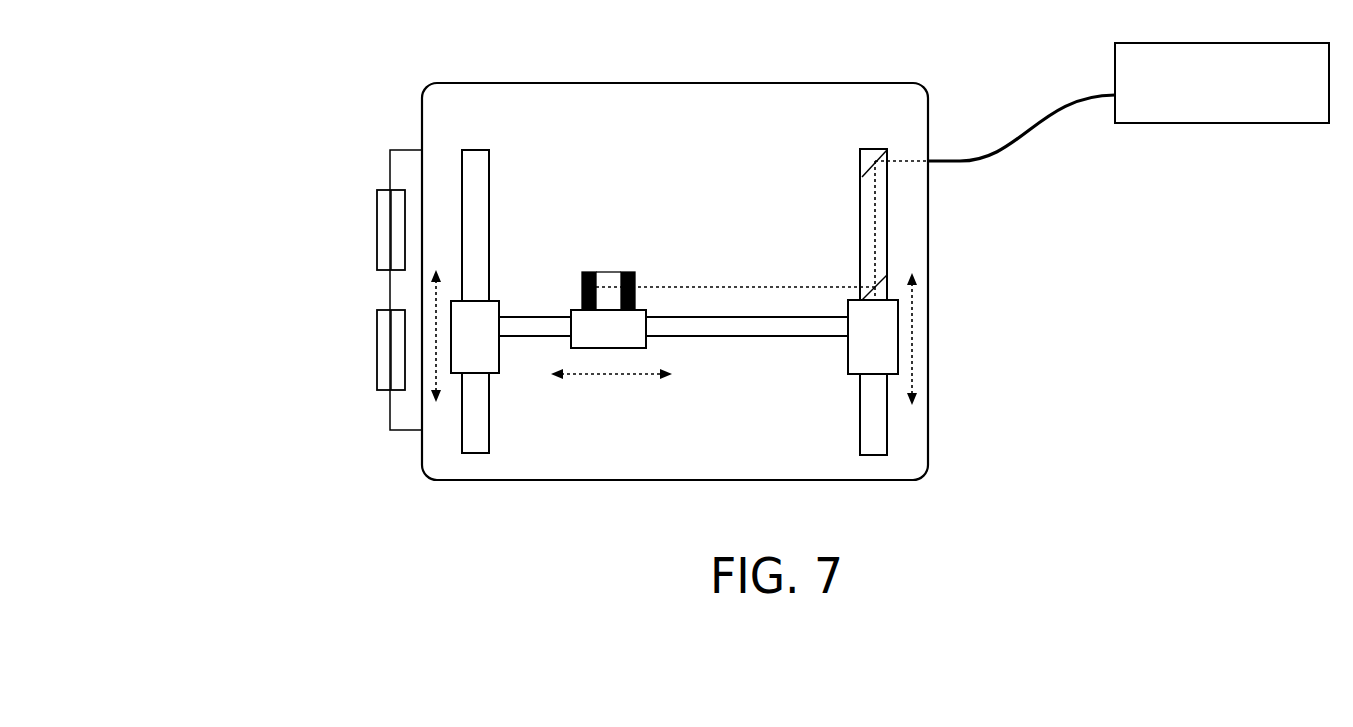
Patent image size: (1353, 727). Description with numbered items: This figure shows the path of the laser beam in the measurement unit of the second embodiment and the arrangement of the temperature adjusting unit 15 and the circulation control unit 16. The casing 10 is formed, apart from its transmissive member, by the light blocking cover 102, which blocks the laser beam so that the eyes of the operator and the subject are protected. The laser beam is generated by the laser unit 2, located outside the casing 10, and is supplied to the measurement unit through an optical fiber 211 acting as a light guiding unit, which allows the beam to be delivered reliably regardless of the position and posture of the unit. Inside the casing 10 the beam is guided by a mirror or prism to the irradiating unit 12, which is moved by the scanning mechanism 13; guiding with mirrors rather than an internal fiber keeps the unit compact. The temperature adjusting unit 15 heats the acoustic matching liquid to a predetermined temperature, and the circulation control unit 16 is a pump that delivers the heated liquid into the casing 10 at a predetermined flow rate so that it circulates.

The light blocking cover 102 is at (465, 83).
The casing 10 is at (875, 93).
The laser unit 2 is at (1222, 83).
The optical fiber 211 is at (990, 155).
The temperature adjusting unit 15 is at (378, 220).
The circulation control unit 16 is at (378, 347).
The irradiating unit 12 is at (597, 272).
The scanning mechanism 13 is at (848, 373).